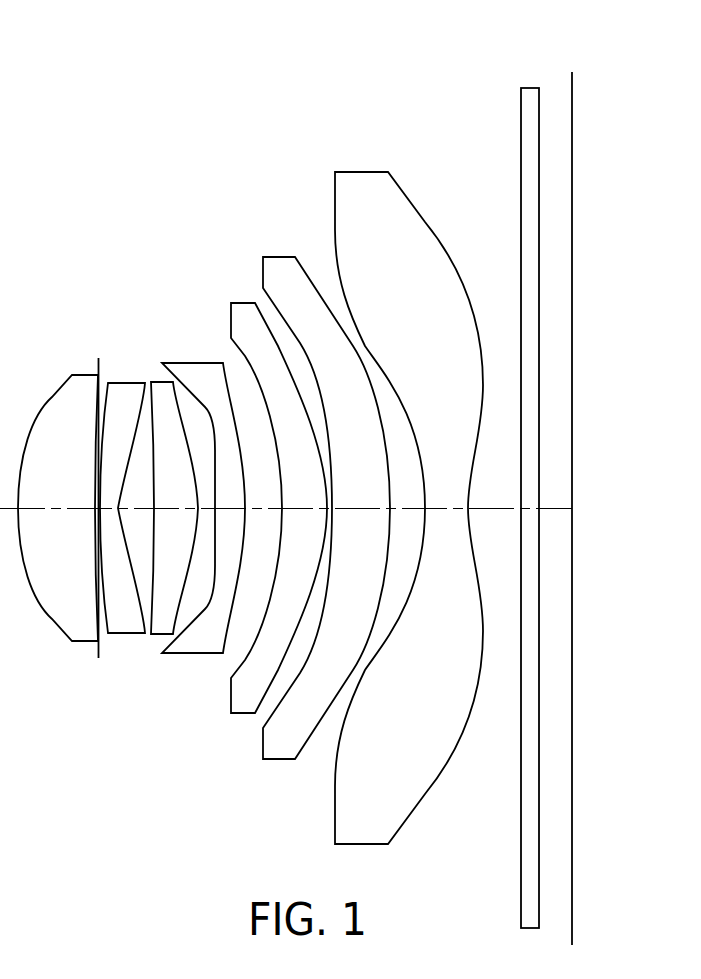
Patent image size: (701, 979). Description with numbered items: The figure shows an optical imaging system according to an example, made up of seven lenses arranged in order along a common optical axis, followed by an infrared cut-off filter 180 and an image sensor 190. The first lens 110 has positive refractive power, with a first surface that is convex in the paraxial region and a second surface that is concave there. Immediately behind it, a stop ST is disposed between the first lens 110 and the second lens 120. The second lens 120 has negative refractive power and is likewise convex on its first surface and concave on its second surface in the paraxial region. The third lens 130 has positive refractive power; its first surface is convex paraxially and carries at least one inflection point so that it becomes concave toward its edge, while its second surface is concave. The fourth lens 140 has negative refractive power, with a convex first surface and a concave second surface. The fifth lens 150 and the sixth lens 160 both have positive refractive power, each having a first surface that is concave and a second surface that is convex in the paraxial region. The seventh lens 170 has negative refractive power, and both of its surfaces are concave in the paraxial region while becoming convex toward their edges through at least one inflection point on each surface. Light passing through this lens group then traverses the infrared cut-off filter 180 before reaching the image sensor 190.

The first lens 110 is at (54, 395).
The stop ST is at (97, 356).
The second lens 120 is at (124, 383).
The third lens 130 is at (165, 381).
The fourth lens 140 is at (207, 362).
The fifth lens 150 is at (240, 302).
The sixth lens 160 is at (277, 256).
The seventh lens 170 is at (365, 171).
The infrared cut-off filter 180 is at (527, 87).
The image sensor 190 is at (573, 88).